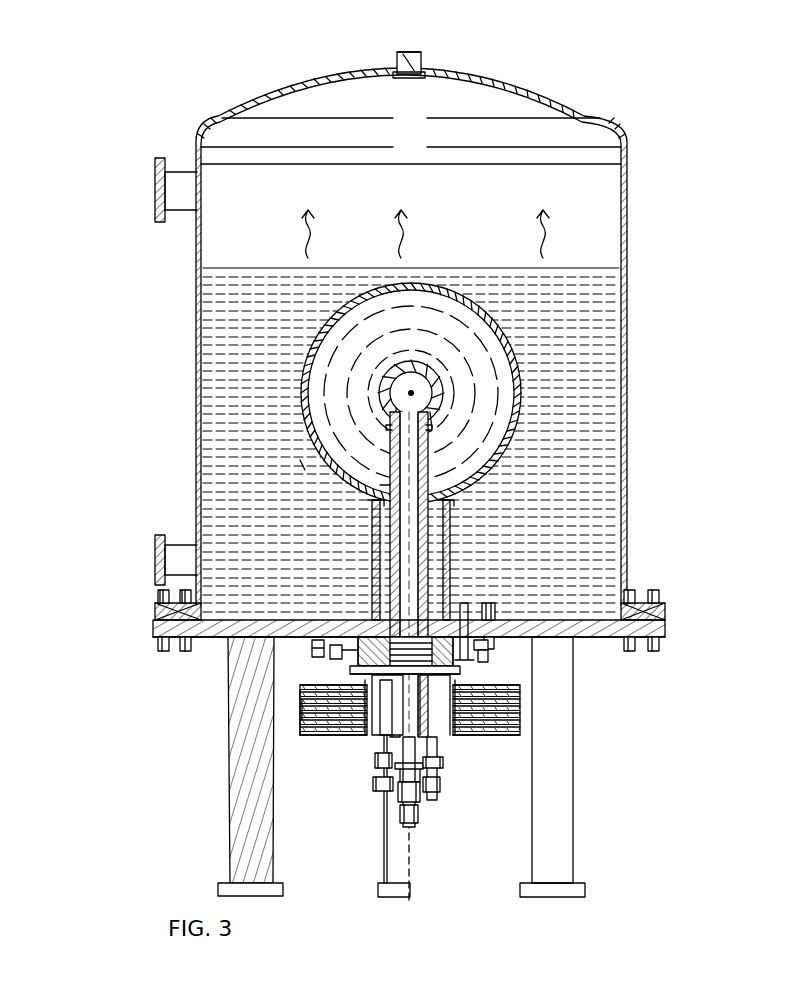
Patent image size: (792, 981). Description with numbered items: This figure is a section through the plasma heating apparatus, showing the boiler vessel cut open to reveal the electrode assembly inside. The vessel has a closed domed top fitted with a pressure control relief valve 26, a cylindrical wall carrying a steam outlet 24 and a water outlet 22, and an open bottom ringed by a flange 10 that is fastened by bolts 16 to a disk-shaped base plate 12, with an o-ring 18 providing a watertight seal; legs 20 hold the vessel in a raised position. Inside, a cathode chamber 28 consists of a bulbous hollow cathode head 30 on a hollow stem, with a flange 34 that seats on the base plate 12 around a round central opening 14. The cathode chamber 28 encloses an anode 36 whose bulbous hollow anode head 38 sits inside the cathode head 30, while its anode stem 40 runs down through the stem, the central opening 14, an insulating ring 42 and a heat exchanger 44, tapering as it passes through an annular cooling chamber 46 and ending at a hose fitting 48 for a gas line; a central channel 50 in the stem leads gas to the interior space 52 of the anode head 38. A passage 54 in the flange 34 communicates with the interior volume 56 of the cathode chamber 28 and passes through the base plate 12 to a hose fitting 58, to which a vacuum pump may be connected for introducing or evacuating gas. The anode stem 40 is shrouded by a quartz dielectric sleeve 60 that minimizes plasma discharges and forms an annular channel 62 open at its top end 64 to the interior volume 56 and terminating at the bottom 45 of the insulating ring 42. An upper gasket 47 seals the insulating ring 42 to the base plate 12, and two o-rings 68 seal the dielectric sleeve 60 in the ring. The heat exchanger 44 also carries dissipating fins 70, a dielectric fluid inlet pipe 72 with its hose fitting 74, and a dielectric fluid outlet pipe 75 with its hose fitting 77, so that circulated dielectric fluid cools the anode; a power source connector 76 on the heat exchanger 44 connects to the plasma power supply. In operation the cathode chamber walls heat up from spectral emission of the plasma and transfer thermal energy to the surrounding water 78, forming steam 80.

The flange 10 is at (668, 627).
The base plate 12 is at (668, 637).
The central opening 14 is at (470, 660).
The bolts 16 is at (660, 596).
The o-ring 18 is at (624, 610).
The legs 20 is at (576, 828).
The water outlet 22 is at (156, 556).
The steam outlet 24 is at (156, 188).
The pressure control relief valve 26 is at (409, 56).
The cathode chamber 28 is at (540, 430).
The cathode head 30 is at (518, 330).
The flange 34 is at (500, 632).
The anode 36 is at (434, 418).
The anode head 38 is at (411, 362).
The anode stem 40 is at (414, 490).
The insulating ring 42 is at (365, 670).
The heat exchanger 44 is at (322, 754).
The bottom of the insulating ring 45 is at (302, 703).
The annular cooling chamber 46 is at (440, 748).
The upper gasket 47 is at (330, 650).
The hose fitting 48 is at (456, 662).
The central channel 50 is at (380, 737).
The interior space 52 is at (398, 390).
The passage 54 is at (470, 618).
The interior volume 56 is at (450, 540).
The hose fitting 58 is at (490, 656).
The dielectric sleeve 60 is at (462, 470).
The annular channel 62 is at (398, 484).
The top end 64 is at (452, 398).
The o-rings 68 is at (492, 702).
The dissipating fins 70 is at (455, 730).
The dielectric fluid inlet pipe 72 is at (380, 775).
The hose fitting 74 is at (390, 803).
The dielectric fluid outlet pipe 75 is at (416, 824).
The power source connector 76 is at (438, 795).
The hose fitting 77 is at (445, 815).
The water 78 is at (268, 318).
The steam 80 is at (568, 222).